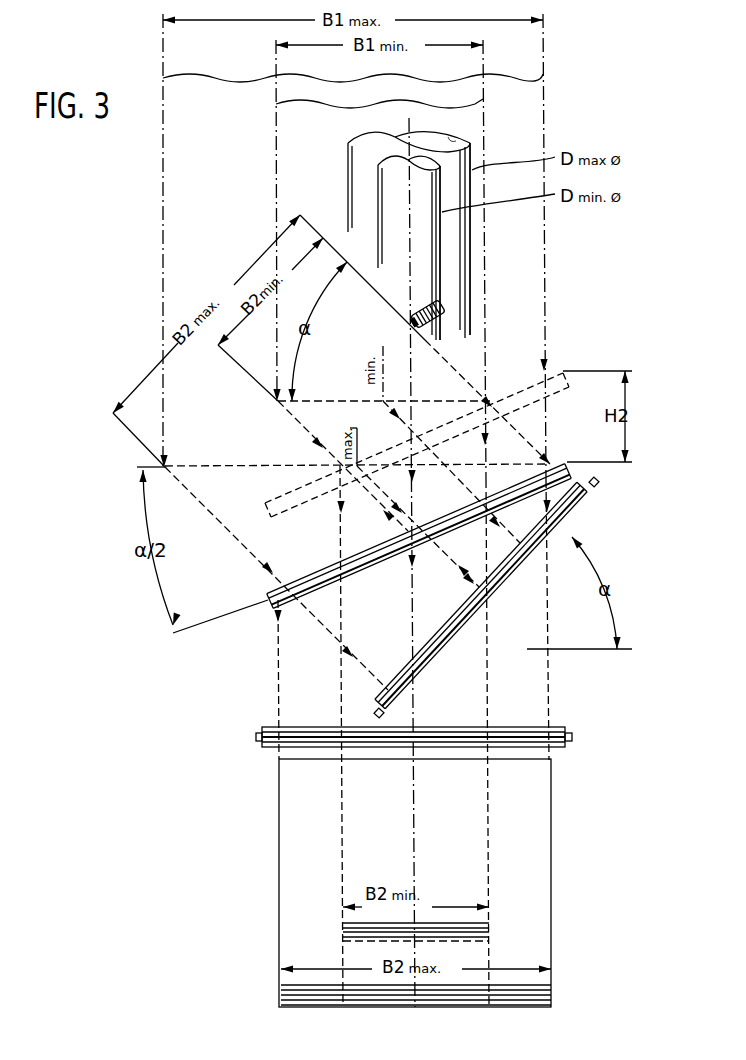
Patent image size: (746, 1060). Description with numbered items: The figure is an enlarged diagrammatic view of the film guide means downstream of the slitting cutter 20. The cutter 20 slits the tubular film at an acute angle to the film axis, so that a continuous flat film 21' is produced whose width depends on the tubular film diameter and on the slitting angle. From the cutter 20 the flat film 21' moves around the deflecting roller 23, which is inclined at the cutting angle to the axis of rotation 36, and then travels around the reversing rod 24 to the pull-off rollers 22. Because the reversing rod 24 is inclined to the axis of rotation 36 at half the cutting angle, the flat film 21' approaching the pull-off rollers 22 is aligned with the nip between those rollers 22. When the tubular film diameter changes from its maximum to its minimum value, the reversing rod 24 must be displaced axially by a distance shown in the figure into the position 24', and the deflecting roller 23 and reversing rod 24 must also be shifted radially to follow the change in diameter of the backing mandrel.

The circular cutter 20 is at (412, 328).
The flat film path 21' is at (261, 679).
The pull-off rollers 22 is at (537, 728).
The deflecting roller 23 is at (506, 582).
The reversing rod 24 is at (419, 536).
The reversing rod in displaced position 24' is at (417, 437).
The axis of rotation 36 is at (415, 712).